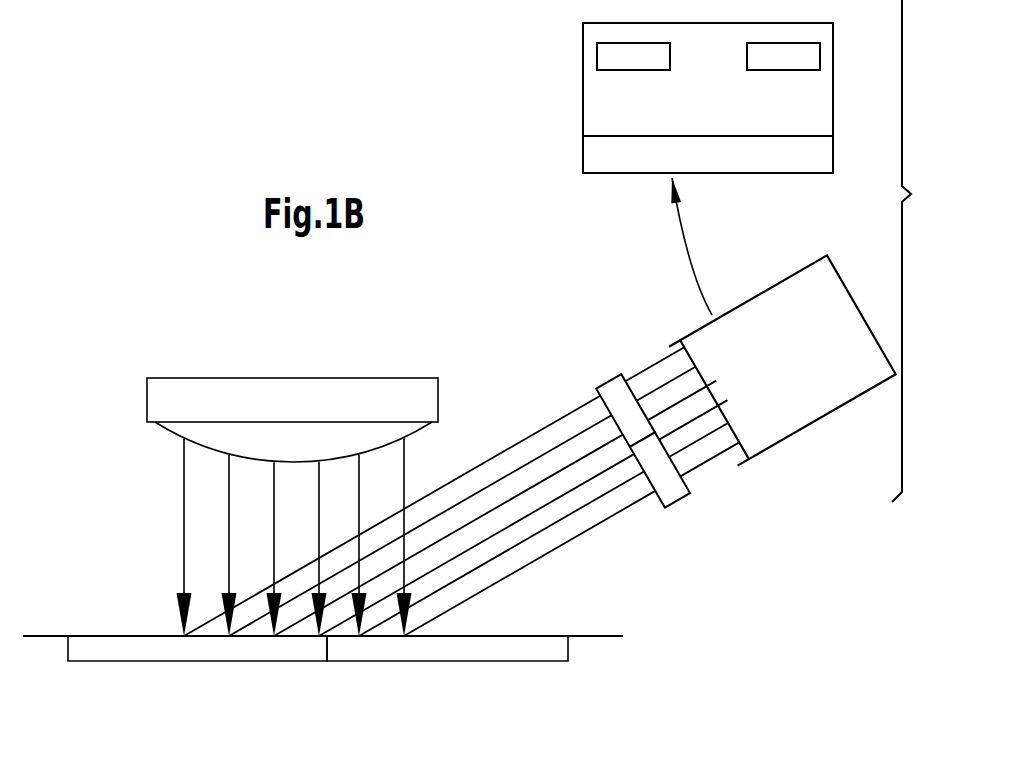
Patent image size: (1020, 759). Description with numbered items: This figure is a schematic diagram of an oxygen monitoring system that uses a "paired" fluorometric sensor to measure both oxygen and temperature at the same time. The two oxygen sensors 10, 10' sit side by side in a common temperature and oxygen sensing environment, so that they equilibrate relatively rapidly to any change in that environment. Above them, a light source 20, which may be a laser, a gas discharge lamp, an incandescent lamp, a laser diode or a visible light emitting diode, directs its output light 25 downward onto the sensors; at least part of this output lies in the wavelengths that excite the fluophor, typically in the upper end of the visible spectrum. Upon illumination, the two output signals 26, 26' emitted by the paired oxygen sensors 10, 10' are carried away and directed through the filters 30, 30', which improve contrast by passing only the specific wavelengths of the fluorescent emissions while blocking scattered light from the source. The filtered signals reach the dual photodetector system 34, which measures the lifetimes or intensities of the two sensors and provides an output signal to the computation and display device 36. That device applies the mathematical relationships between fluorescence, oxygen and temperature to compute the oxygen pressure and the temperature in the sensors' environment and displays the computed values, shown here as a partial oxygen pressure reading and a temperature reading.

The fluorometric oxygen sensor 10 is at (197, 680).
The second oxygen sensor 10' is at (452, 677).
The light source 20 is at (307, 388).
The output light 25 is at (196, 505).
The fluorescent emission 26 is at (450, 491).
The second output signal 26' is at (529, 518).
The filter 30 is at (606, 376).
The second filter 30' is at (685, 507).
The dual photodetector system 34 is at (798, 402).
The computation and display device 36 is at (827, 97).